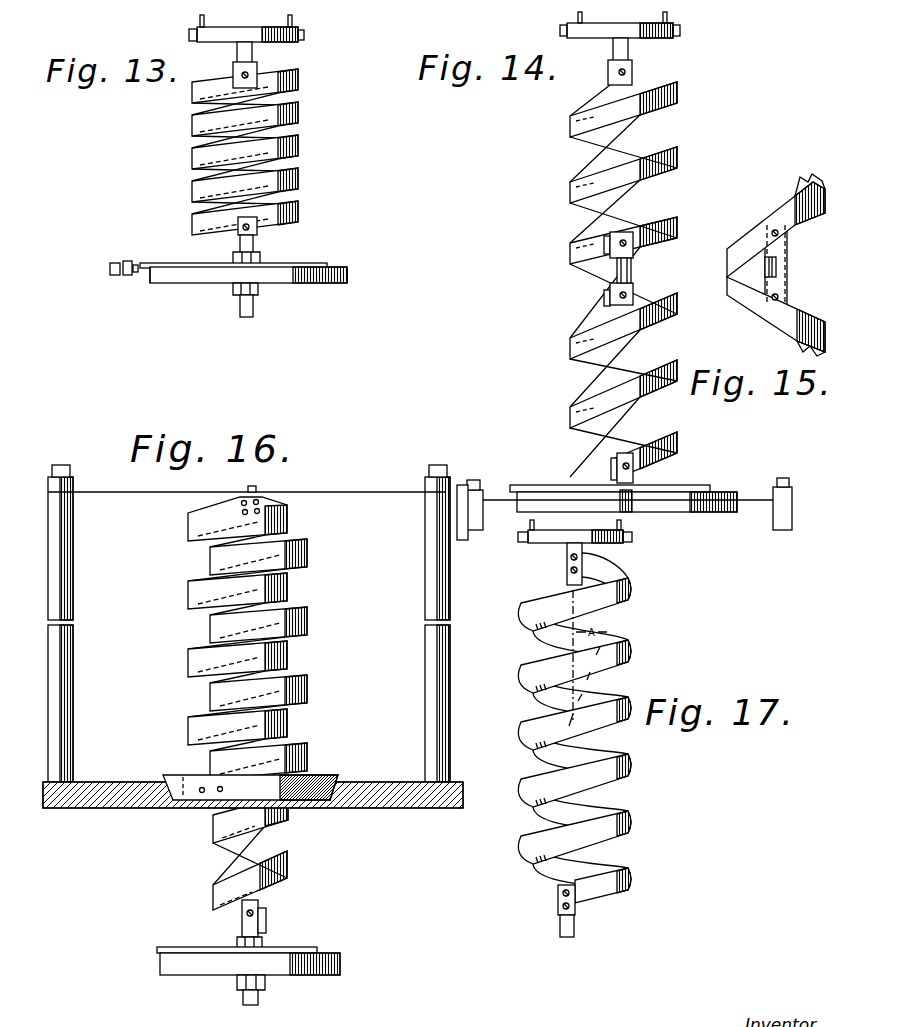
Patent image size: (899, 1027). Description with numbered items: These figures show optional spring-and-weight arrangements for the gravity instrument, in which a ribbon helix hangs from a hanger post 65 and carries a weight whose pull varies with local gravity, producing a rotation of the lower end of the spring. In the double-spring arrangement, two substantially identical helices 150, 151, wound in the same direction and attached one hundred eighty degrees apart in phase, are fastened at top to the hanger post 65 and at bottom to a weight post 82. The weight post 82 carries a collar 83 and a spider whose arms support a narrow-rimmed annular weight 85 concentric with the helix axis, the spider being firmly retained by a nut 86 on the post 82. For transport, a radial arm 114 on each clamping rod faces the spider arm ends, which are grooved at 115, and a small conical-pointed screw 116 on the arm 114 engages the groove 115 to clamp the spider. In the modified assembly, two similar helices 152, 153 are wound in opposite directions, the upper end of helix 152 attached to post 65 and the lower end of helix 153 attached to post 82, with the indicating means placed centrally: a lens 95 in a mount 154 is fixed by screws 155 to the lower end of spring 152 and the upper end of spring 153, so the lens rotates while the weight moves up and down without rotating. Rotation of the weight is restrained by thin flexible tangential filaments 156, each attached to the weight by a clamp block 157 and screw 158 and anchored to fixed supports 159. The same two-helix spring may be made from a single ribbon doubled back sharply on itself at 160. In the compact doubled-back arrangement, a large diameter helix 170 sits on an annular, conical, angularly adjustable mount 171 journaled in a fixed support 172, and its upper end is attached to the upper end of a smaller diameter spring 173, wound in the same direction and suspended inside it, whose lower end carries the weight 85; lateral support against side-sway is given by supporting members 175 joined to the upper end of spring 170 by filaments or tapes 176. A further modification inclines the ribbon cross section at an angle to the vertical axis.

In FIG. 13, the hanger post 65 is at (252, 50).
In FIG. 14, the hanger post 65 is at (630, 51).
In FIG. 13, the weight post 82 is at (238, 247).
In FIG. 14, the weight post 82 is at (636, 470).
In FIG. 13, the collar 83 is at (238, 298).
In FIG. 13, the annular weight 85 is at (348, 272).
In FIG. 16, the annular weight 85 is at (342, 965).
In FIG. 13, the nut 86 is at (262, 258).
In FIG. 14, the lens 95 is at (616, 268).
In FIG. 13, the radial arm 114 is at (120, 262).
In FIG. 13, the groove 115 is at (323, 284).
In FIG. 13, the conical-pointed screw 116 is at (134, 266).
In FIG. 13, the helix 150 is at (258, 74).
In FIG. 13, the helix 151 is at (298, 107).
In FIG. 14, the helix 152 is at (679, 152).
In FIG. 14, the helix 153 is at (681, 312).
In FIG. 14, the mount 154 is at (634, 286).
In FIG. 14, the screw 155 is at (618, 302).
In FIG. 14, the tangential filament 156 is at (746, 495).
In FIG. 14, the clamp block 157 is at (640, 499).
In FIG. 14, the screw 158 is at (627, 512).
In FIG. 14, the fixed support 159 is at (783, 528).
In FIG. 15, the doubled-back portion 160 is at (727, 267).
In FIG. 16, the large diameter helix 170 is at (310, 553).
In FIG. 16, the angularly adjustable mount 171 is at (340, 776).
In FIG. 16, the fixed support 172 is at (340, 809).
In FIG. 16, the smaller diameter spring 173 is at (290, 866).
In FIG. 16, the supporting member 175 is at (425, 556).
In FIG. 16, the filament or tape 176 is at (379, 495).